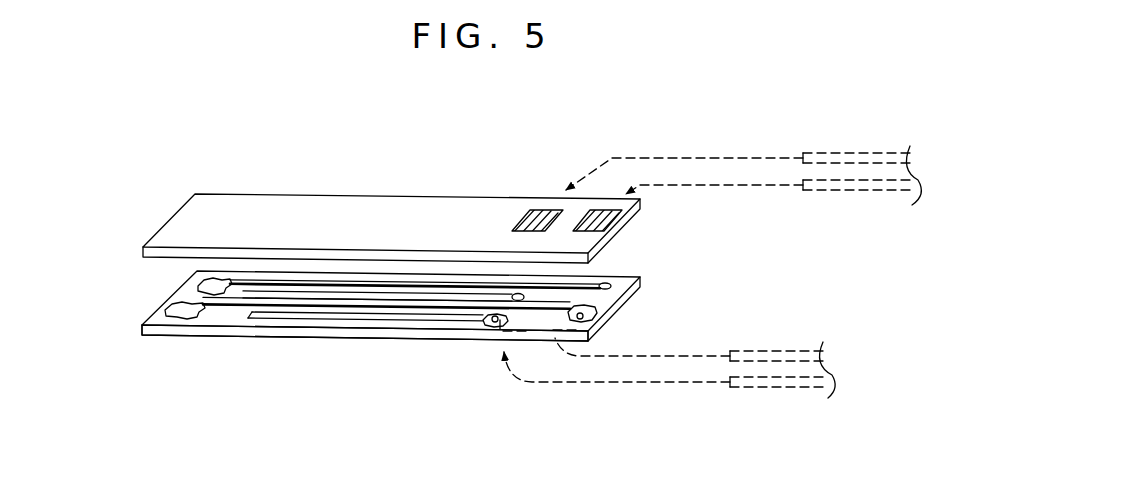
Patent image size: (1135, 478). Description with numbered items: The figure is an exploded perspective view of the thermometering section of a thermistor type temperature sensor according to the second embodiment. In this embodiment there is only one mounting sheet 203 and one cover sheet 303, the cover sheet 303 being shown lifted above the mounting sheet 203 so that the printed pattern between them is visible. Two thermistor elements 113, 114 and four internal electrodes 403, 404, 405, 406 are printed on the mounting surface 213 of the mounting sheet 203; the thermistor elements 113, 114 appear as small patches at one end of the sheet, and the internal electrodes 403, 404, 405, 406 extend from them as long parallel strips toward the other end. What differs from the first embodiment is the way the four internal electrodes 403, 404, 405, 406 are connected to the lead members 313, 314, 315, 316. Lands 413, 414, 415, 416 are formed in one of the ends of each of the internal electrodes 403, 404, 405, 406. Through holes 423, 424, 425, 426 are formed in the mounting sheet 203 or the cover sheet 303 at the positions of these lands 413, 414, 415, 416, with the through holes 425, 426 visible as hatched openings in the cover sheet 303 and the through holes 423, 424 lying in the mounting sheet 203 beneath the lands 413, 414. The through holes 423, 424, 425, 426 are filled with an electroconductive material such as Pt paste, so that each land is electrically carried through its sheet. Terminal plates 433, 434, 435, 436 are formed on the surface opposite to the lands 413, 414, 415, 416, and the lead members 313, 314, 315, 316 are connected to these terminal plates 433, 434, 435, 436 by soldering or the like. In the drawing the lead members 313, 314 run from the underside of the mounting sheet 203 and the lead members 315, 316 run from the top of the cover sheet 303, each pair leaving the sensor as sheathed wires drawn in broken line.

The cover sheet 303 is at (235, 208).
The mounting surface 213 is at (379, 337).
The mounting sheet 203 is at (195, 334).
The internal electrode 405 is at (326, 296).
The internal electrode 406 is at (408, 283).
The internal electrode 403 is at (250, 314).
The internal electrode 404 is at (319, 312).
The thermistor element 113 is at (170, 307).
The thermistor element 114 is at (200, 284).
The land 415 is at (516, 294).
The land 416 is at (612, 286).
The land 413 is at (484, 328).
The land 414 is at (596, 320).
The through hole 423 is at (488, 343).
The through hole 424 is at (596, 329).
The through hole 425 is at (520, 212).
The through hole 426 is at (613, 222).
The terminal plate 433 is at (513, 320).
The terminal plate 434 is at (563, 345).
The terminal plate 435 is at (566, 216).
The terminal plate 436 is at (628, 197).
The lead member 313 is at (783, 388).
The lead member 314 is at (782, 350).
The lead member 315 is at (848, 152).
The lead member 316 is at (865, 192).